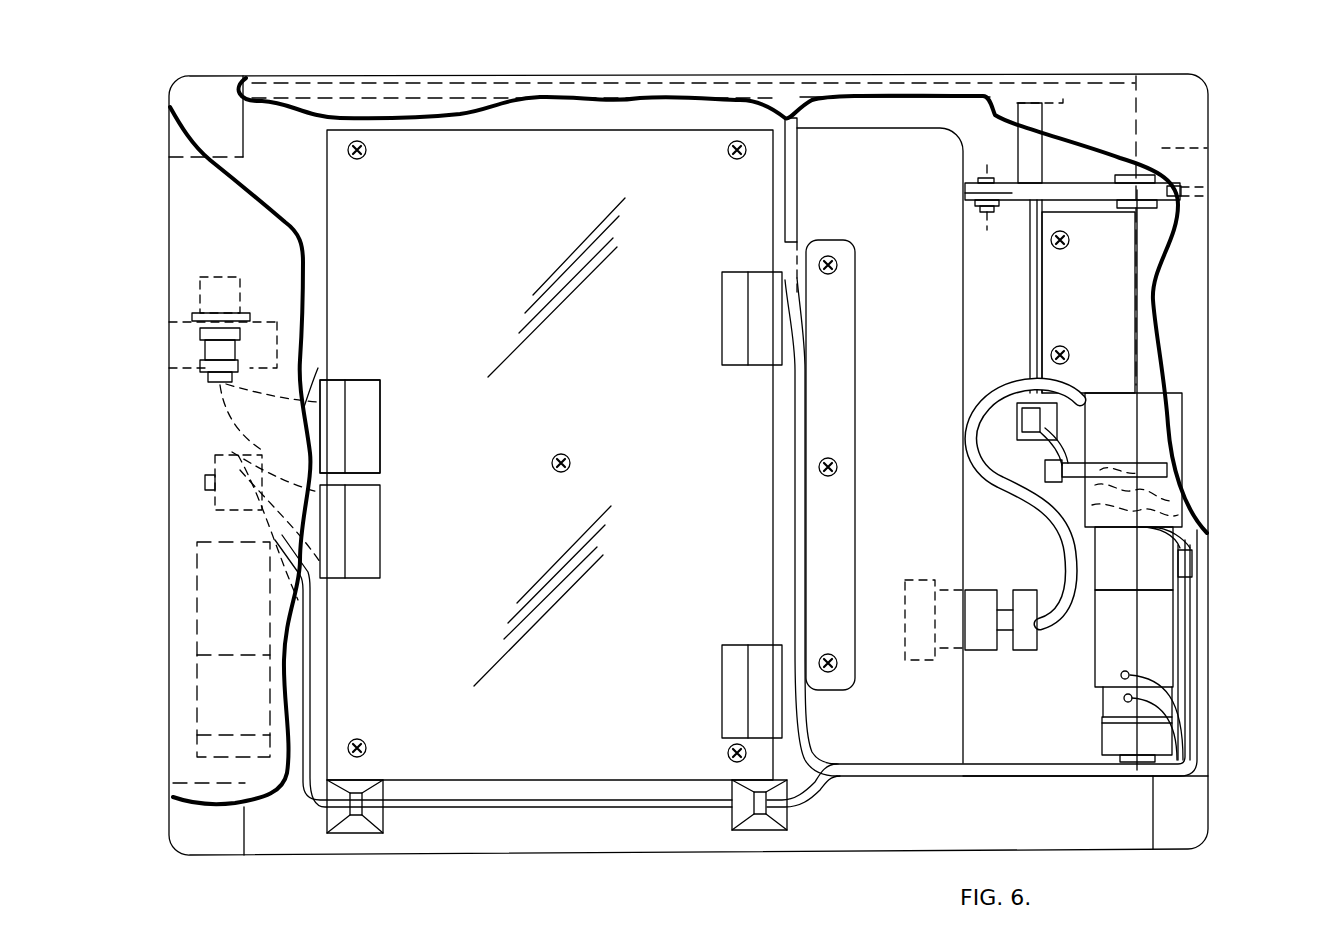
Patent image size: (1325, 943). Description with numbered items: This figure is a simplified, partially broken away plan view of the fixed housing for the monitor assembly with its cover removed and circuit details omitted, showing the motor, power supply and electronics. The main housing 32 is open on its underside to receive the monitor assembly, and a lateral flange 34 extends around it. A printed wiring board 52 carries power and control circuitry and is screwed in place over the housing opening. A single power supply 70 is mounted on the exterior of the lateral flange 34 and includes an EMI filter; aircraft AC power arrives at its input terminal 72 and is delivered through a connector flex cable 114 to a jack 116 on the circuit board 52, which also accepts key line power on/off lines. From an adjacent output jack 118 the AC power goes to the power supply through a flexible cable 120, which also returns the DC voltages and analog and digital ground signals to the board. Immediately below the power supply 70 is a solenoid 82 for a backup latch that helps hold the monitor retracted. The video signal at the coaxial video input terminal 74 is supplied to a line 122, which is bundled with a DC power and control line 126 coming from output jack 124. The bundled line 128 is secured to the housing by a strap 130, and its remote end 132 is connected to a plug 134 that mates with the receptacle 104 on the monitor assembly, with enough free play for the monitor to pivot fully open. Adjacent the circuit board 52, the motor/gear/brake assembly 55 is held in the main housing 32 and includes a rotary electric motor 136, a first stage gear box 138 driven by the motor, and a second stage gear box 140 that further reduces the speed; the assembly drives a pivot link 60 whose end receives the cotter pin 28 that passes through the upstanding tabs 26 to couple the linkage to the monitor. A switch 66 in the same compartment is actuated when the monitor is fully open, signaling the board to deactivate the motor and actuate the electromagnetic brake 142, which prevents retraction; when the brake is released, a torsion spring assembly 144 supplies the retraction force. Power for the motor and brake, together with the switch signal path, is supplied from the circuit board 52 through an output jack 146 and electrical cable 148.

The upstanding arms or tabs 26 is at (975, 172).
The cotter pin 28 is at (985, 176).
The main housing 32 is at (359, 74).
The lateral flange 34 is at (842, 102).
The printed wiring board 52 is at (540, 155).
The motor/gear/brake assembly 55 is at (1182, 658).
The pivot link 60 is at (1088, 192).
The switch 66 is at (1030, 143).
The power supply 70 is at (206, 586).
The input terminal 72 is at (168, 320).
The coaxial video input terminal 74 is at (215, 300).
The solenoid 82 is at (240, 455).
The receptacle 104 is at (920, 582).
The connector flex cable 114 is at (318, 400).
The jack 116 is at (356, 380).
The output jack 118 is at (347, 578).
The flexible cable 120 is at (295, 518).
The line 122 is at (455, 805).
The output jack 124 is at (721, 678).
The line 126 is at (820, 742).
The bundled line 128 is at (1062, 772).
The strap 130 is at (1158, 470).
The remote end 132 is at (1007, 392).
The plug 134 is at (987, 650).
The rotary electric motor 136 is at (1120, 645).
The first stage gear box 138 is at (1157, 572).
The second stage gear box 140 is at (1150, 413).
The electromagnetic brake 142 is at (1112, 736).
The torsion spring assembly 144 is at (1052, 283).
The output jack 146 is at (750, 380).
The electrical cable 148 is at (800, 507).